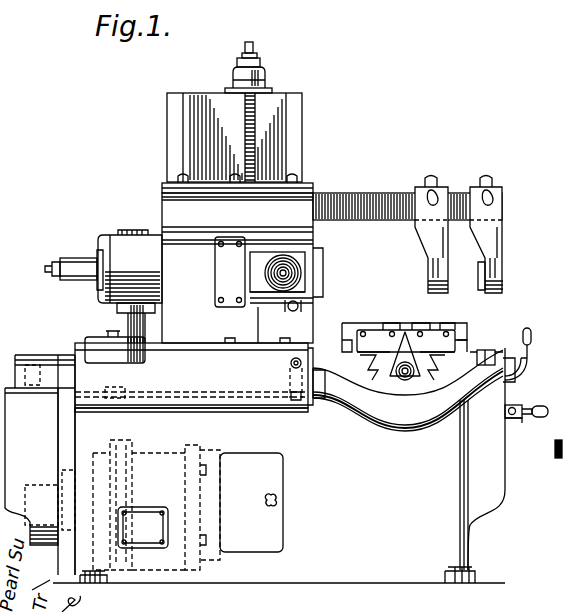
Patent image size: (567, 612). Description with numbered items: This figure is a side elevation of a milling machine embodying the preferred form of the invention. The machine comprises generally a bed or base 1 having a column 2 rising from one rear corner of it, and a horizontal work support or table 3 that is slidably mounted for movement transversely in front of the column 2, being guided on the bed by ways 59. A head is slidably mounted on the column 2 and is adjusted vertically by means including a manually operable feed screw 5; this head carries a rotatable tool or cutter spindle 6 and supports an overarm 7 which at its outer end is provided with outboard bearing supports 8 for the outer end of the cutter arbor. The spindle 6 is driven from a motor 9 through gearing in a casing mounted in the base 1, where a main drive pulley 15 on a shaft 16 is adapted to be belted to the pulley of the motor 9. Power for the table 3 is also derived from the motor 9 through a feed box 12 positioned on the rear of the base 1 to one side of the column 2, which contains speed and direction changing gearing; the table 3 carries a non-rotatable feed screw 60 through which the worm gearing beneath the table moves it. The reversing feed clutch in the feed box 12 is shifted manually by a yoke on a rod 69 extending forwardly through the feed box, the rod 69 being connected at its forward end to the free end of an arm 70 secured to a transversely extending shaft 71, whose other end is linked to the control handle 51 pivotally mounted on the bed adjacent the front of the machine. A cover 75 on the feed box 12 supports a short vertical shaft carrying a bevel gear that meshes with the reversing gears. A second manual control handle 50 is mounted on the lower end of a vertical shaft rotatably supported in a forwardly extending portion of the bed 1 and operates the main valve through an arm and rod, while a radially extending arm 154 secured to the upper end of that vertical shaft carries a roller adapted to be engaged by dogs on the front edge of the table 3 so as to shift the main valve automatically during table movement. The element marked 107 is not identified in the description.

The bed or base 1 is at (279, 465).
The column 2 is at (234, 137).
The work support or table 3 is at (350, 323).
The feed screw 5 is at (258, 118).
The tool or cutter spindle 6 is at (323, 259).
The overarm 7 is at (352, 205).
The outboard bearing supports 8 is at (436, 238).
The motor 9 is at (152, 460).
The feed box 12 is at (210, 392).
The main drive pulley 15 is at (33, 365).
The shaft 16 is at (557, 358).
The manual control handle 50 is at (530, 330).
The control handle 51 is at (542, 405).
The ways 59 is at (368, 370).
The feed screw 60 is at (407, 380).
The rod 69 is at (265, 392).
The arm 70 is at (313, 398).
The shaft 71 is at (292, 358).
The cover 75 is at (200, 347).
The bracket 107 is at (517, 420).
The radially extending arm 154 is at (478, 350).